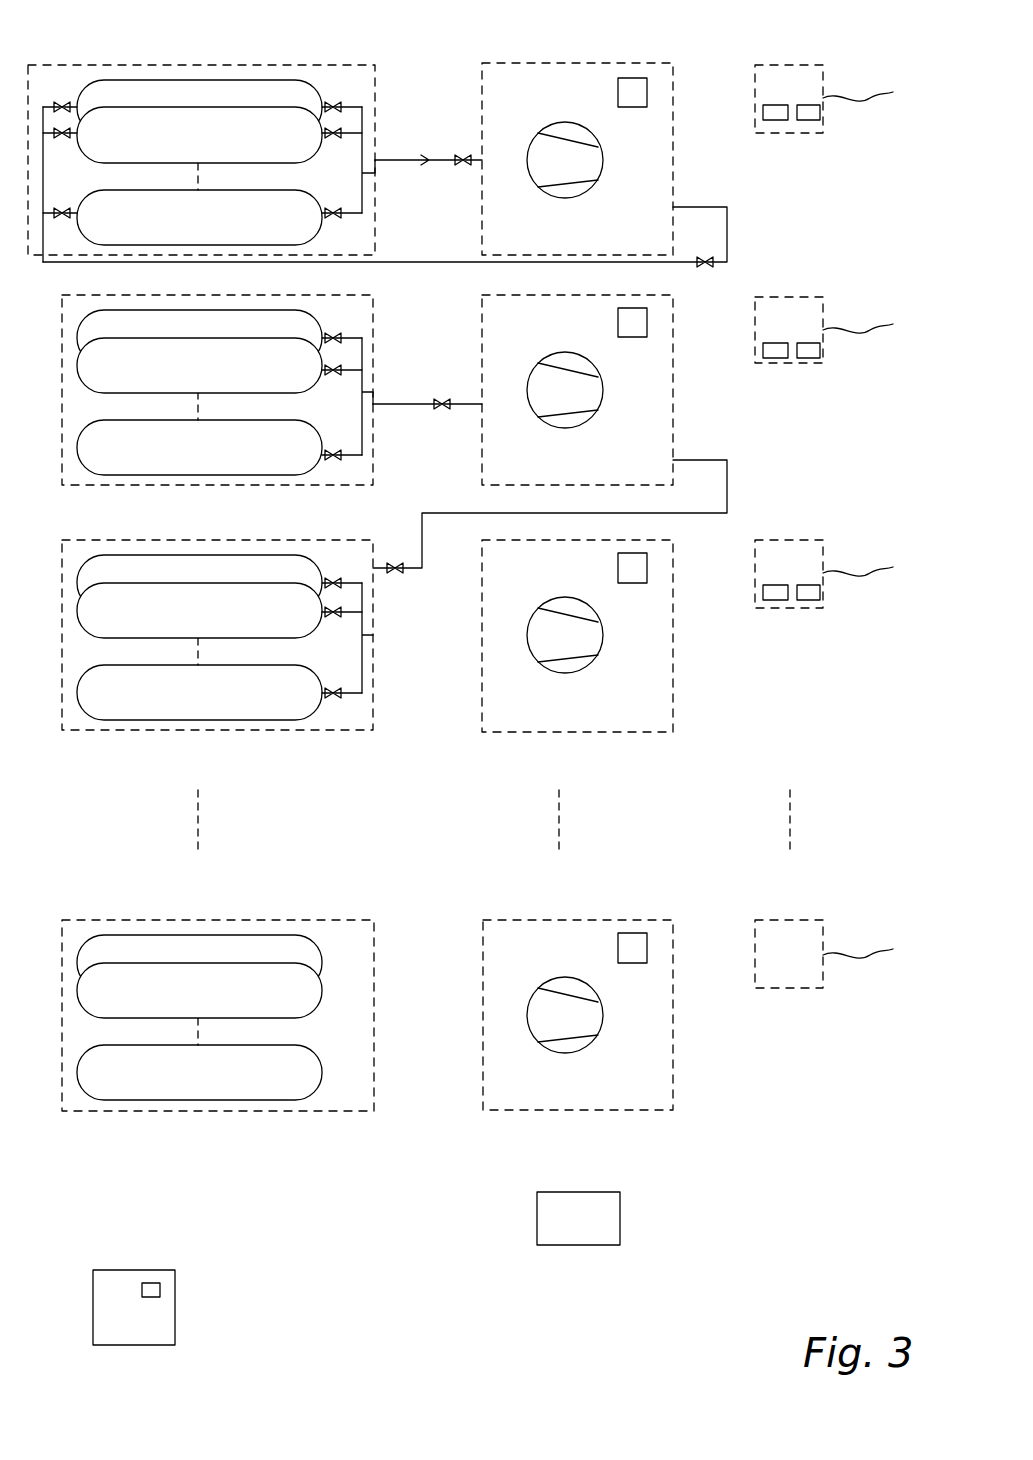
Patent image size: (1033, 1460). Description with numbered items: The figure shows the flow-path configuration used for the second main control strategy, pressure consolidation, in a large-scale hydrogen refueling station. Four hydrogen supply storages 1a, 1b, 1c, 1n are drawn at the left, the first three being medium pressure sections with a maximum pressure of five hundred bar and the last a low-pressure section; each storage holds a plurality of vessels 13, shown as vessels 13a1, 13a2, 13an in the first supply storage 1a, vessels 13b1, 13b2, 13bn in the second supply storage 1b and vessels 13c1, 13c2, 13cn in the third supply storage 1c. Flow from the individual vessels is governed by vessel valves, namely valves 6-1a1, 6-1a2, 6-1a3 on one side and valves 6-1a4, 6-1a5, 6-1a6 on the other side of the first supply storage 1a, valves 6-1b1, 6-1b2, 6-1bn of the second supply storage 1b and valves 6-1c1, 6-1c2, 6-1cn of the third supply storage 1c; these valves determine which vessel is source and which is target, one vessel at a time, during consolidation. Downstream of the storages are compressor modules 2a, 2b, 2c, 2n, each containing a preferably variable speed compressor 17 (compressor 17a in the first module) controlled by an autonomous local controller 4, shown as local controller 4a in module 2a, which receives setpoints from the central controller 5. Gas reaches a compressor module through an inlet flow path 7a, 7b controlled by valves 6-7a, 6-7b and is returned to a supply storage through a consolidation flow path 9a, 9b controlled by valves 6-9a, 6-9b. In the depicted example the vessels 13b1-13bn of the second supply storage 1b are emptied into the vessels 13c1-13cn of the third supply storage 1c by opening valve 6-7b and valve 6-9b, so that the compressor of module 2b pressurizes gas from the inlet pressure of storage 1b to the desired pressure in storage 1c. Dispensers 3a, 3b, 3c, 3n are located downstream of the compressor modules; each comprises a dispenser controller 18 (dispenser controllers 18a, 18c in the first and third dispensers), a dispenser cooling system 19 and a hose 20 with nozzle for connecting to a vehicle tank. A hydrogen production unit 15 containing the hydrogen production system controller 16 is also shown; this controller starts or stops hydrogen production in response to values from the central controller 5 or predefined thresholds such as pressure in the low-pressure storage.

The first supply storage 1a is at (195, 65).
The second supply storage 1b is at (62, 354).
The third supply storage 1c is at (63, 588).
The supply storage 1n is at (62, 950).
The first compressor module 2a is at (577, 159).
The second compressor module 2b is at (577, 390).
The third compressor module 2c is at (577, 636).
The compressor module 2n is at (578, 1015).
The first dispenser module 3a is at (789, 99).
The second dispenser module 3b is at (789, 330).
The third dispenser module 3c is at (789, 574).
The dispenser module 3n is at (789, 954).
The local controller 4a is at (633, 107).
The local controller 4 is at (632, 635).
The central controller 5 is at (578, 1218).
The vessel valve 6-1a1 is at (333, 104).
The vessel valve 6-1a2 is at (333, 136).
The vessel valve 6-1a3 is at (333, 216).
The vessel valve 6-1a4 is at (62, 104).
The vessel valve 6-1a5 is at (62, 136).
The vessel valve 6-1a6 is at (62, 216).
The vessel valve 6-1b1 is at (333, 335).
The vessel valve 6-1b2 is at (333, 373).
The vessel valve 6-1bn is at (333, 458).
The vessel valve 6-1c1 is at (333, 580).
The vessel valve 6-1c2 is at (333, 615).
The vessel valve 6-1cn is at (333, 696).
The inlet flow path valve 6-7a is at (463, 156).
The inlet flow path valve 6-7b is at (445, 407).
The consolidation flow path valve 6-9a is at (705, 266).
The consolidation flow path valve 6-9b is at (398, 572).
The inlet flow path 7a is at (445, 162).
The inlet flow path 7b is at (403, 400).
The consolidation flow path 9a is at (727, 232).
The consolidation flow path 9b is at (727, 470).
The vessel 13 is at (199, 1017).
The vessel 13a1 is at (199, 107).
The vessel 13a2 is at (199, 135).
The vessel 13an is at (199, 217).
The vessel 13b1 is at (199, 337).
The vessel 13b2 is at (199, 365).
The vessel 13bn is at (199, 447).
The vessel 13c1 is at (199, 582).
The vessel 13c2 is at (199, 610).
The vessel 13cn is at (199, 692).
The vehicle 15 is at (134, 1307).
The hydrogen production system controller 16 is at (160, 1290).
The compressor 17 is at (572, 428).
The compressor 17a is at (572, 198).
The dispenser controller 18 is at (778, 359).
The dispenser controller 18a is at (778, 121).
The dispenser controller 18c is at (778, 601).
The dispenser cooling system 19 is at (808, 121).
The hose 20 is at (875, 112).